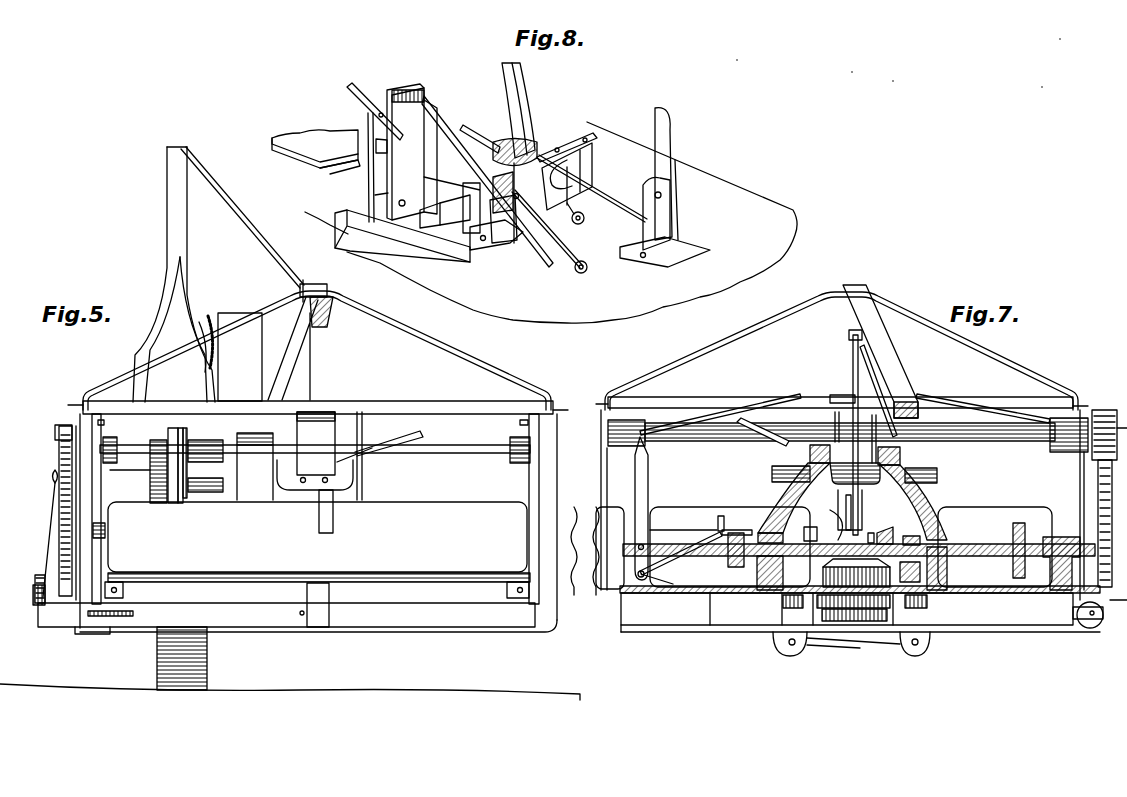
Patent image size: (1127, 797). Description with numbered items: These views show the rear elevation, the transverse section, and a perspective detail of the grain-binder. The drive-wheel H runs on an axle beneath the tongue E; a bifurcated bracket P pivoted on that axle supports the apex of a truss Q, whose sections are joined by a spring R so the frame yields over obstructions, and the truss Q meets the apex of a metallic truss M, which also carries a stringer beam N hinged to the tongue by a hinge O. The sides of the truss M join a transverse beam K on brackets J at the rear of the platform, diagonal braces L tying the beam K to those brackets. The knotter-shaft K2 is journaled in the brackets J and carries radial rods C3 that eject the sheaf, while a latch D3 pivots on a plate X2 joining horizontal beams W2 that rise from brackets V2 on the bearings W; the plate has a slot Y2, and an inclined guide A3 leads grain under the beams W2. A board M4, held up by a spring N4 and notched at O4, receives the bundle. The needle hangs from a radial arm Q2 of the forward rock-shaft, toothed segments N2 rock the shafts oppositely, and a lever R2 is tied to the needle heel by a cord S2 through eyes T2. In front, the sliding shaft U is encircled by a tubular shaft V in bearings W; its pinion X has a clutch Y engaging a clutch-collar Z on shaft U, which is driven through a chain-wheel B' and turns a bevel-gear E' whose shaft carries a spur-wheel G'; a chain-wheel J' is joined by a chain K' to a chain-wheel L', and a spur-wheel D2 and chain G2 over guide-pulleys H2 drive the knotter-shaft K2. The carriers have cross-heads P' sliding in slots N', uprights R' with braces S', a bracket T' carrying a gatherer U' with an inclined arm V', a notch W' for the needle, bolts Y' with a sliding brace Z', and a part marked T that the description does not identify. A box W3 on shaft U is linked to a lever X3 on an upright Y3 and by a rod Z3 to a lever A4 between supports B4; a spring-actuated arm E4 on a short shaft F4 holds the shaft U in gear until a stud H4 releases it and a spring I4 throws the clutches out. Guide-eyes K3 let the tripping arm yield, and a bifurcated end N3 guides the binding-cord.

In FIG. 5, the bifurcated metallic bracket P is at (169, 274).
In FIG. 5, the truss Q is at (256, 256).
In FIG. 8, the truss Q is at (315, 149).
In FIG. 5, the stringer beam N is at (303, 333).
In FIG. 7, the stringer beam N is at (881, 361).
In FIG. 5, the metallic truss M is at (448, 340).
In FIG. 7, the metallic truss M is at (958, 342).
In FIG. 5, the transverse beam K is at (318, 396).
In FIG. 7, the transverse beam K is at (842, 392).
In FIG. 5, the brackets or frames J is at (281, 509).
In FIG. 5, the knotter-shaft K2 is at (188, 448).
In FIG. 7, the knotter-shaft K2 is at (718, 443).
In FIG. 5, the tongue E is at (224, 343).
In FIG. 5, the spring R is at (193, 347).
In FIG. 5, the radial rods C3 is at (345, 462).
In FIG. 5, the latch D3 is at (366, 470).
In FIG. 5, the inclined guide A3 is at (413, 440).
In FIG. 5, the notches O4 is at (319, 527).
In FIG. 7, the notches O4 is at (837, 521).
In FIG. 5, the uprights R' is at (263, 483).
In FIG. 8, the uprights R' is at (410, 152).
In FIG. 7, the uprights R' is at (855, 472).
In FIG. 5, the board M4 is at (317, 550).
In FIG. 7, the board M4 is at (860, 596).
In FIG. 5, the spring N4 is at (530, 608).
In FIG. 7, the spring N4 is at (642, 495).
In FIG. 5, the cord S2 is at (250, 614).
In FIG. 5, the eyes or guides T2 is at (314, 627).
In FIG. 5, the brackets V2 is at (115, 628).
In FIG. 7, the brackets V2 is at (950, 494).
In FIG. 5, the drive-wheel H is at (156, 662).
In FIG. 5, the arm or lever R2 is at (58, 514).
In FIG. 5, the arm Q2 is at (54, 496).
In FIG. 5, the toothed segments N2 is at (35, 585).
In FIG. 8, the longitudinal slots N' is at (402, 233).
In FIG. 8, the notch W' is at (336, 172).
In FIG. 7, the notch W' is at (1047, 528).
In FIG. 8, the pin T is at (363, 144).
In FIG. 8, the vertical gatherer U' is at (359, 167).
In FIG. 8, the inclined arm V' is at (375, 110).
In FIG. 8, the hinge O is at (375, 195).
In FIG. 8, the inclined braces S' is at (487, 181).
In FIG. 8, the transverse shaft U is at (480, 133).
In FIG. 7, the transverse shaft U is at (859, 543).
In FIG. 8, the slot Y2 is at (528, 92).
In FIG. 8, the lever X3 is at (567, 141).
In FIG. 8, the box W3 is at (596, 157).
In FIG. 7, the box W3 is at (742, 568).
In FIG. 8, the upright Y3 is at (586, 172).
In FIG. 8, the vertical lever A4 is at (648, 165).
In FIG. 8, the spring-actuated arm E4 is at (528, 182).
In FIG. 7, the spring-actuated arm E4 is at (657, 535).
In FIG. 8, the pivoted rod Z3 is at (615, 202).
In FIG. 7, the pivoted rod Z3 is at (700, 543).
In FIG. 8, the spring I4 is at (574, 222).
In FIG. 8, the stud H4 is at (478, 245).
In FIG. 8, the short shaft F4 is at (514, 242).
In FIG. 8, the H-shaped cross-heads P' is at (450, 213).
In FIG. 8, the uprights or supports B4 is at (648, 228).
In FIG. 7, the guide-eyes K3 is at (848, 388).
In FIG. 7, the diagonal braces L is at (845, 414).
In FIG. 7, the horizontal beams W2 is at (808, 455).
In FIG. 7, the bifurcated end N3 is at (836, 492).
In FIG. 7, the bracket T' is at (800, 530).
In FIG. 7, the tubular shaft V is at (863, 532).
In FIG. 7, the pinion X is at (885, 527).
In FIG. 7, the clutch Y is at (911, 531).
In FIG. 7, the bearings W is at (918, 553).
In FIG. 7, the chain-wheel B' is at (1009, 546).
In FIG. 7, the clutch-collar Z is at (910, 573).
In FIG. 7, the bevel-gear E' is at (838, 573).
In FIG. 7, the metallic plate X2 is at (722, 528).
In FIG. 7, the spur-wheel D2 is at (783, 602).
In FIG. 7, the chain G2 is at (822, 614).
In FIG. 7, the chain K' is at (839, 645).
In FIG. 7, the longitudinal bolts Y' is at (799, 662).
In FIG. 7, the transverse brace Z' is at (835, 654).
In FIG. 7, the chain-wheel J' is at (860, 642).
In FIG. 7, the spur-wheel G' is at (884, 645).
In FIG. 7, the guide-pulleys H2 is at (1092, 628).
In FIG. 7, the chain-wheel L' is at (1109, 530).